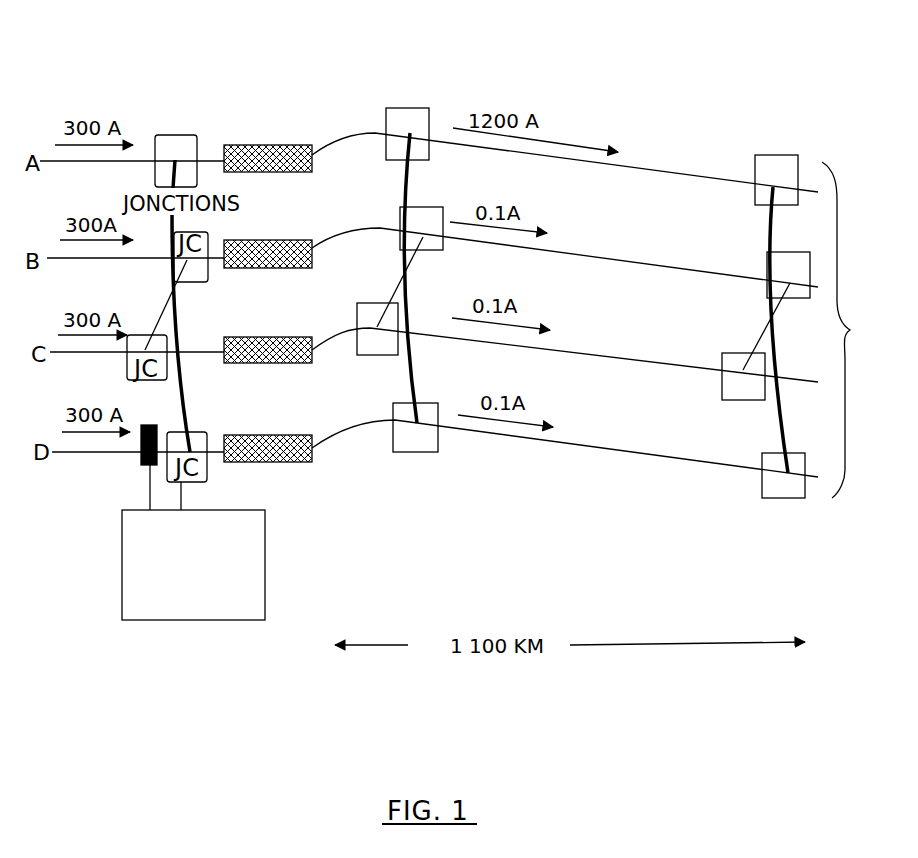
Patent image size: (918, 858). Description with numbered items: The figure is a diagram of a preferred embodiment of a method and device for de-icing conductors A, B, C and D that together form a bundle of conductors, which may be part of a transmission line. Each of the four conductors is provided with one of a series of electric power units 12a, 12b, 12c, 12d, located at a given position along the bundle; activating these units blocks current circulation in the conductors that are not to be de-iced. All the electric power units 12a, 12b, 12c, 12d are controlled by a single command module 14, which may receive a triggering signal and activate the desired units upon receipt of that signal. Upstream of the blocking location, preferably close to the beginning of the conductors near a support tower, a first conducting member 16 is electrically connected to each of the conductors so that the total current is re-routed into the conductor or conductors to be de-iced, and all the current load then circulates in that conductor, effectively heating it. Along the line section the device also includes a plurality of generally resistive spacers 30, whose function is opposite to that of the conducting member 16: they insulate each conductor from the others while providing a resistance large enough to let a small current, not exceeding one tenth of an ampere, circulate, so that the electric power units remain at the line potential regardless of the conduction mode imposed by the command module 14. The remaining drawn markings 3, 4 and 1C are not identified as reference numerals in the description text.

The first conducting member 16 is at (180, 137).
The resistive spacer 30 is at (409, 108).
The cross connection between junctions 3 is at (166, 305).
The switch / interrupter element 4 is at (135, 462).
The command module 14 is at (173, 620).
The electric power unit 12a is at (292, 172).
The electric power unit 12b is at (262, 270).
The electric power unit 12c is at (277, 363).
The electric power unit 12d is at (295, 462).
The remote terminal group 1C is at (803, 326).